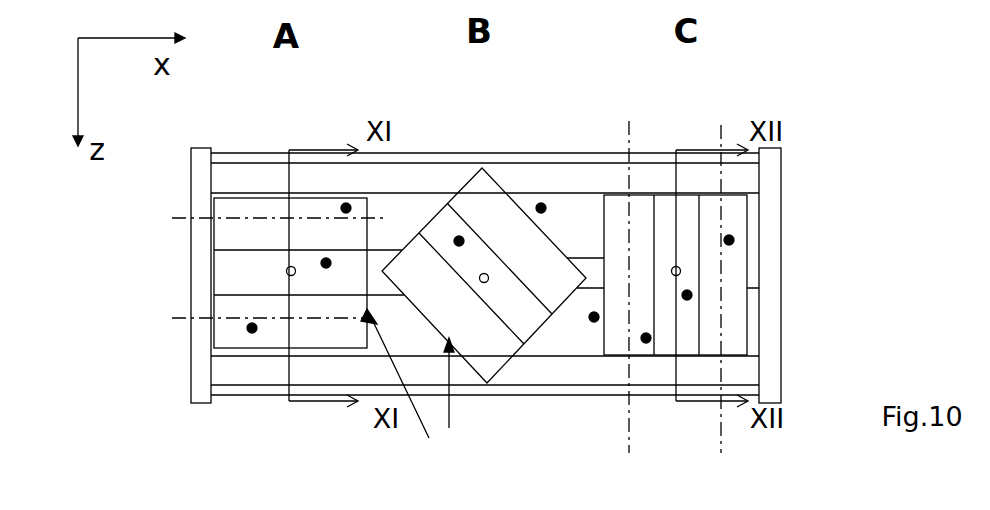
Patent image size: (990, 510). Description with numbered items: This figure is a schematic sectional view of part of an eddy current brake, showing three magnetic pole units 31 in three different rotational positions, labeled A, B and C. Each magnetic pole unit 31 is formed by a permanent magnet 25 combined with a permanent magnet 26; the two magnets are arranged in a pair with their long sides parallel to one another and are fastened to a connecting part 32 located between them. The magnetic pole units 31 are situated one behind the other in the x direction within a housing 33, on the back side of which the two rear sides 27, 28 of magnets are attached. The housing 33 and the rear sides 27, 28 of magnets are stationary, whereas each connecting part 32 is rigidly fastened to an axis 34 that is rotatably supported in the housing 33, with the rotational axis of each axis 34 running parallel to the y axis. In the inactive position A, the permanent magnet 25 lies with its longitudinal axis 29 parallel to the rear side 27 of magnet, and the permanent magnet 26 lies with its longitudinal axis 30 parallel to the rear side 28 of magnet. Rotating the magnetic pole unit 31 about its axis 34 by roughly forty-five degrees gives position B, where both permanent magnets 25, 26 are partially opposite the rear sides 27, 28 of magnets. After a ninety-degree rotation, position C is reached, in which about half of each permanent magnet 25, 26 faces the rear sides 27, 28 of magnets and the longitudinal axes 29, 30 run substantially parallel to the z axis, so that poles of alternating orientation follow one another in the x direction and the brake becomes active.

The permanent magnet 25 is at (347, 210).
The permanent magnet 26 is at (253, 330).
The rear side of magnet 27 is at (542, 210).
The rear side of magnet 28 is at (595, 319).
The longitudinal axis 29 is at (185, 218).
The longitudinal axis 30 is at (195, 320).
The magnetic pole unit 31 is at (412, 386).
The connecting part 32 is at (327, 265).
The housing 33 is at (420, 153).
The axis 34 is at (292, 273).